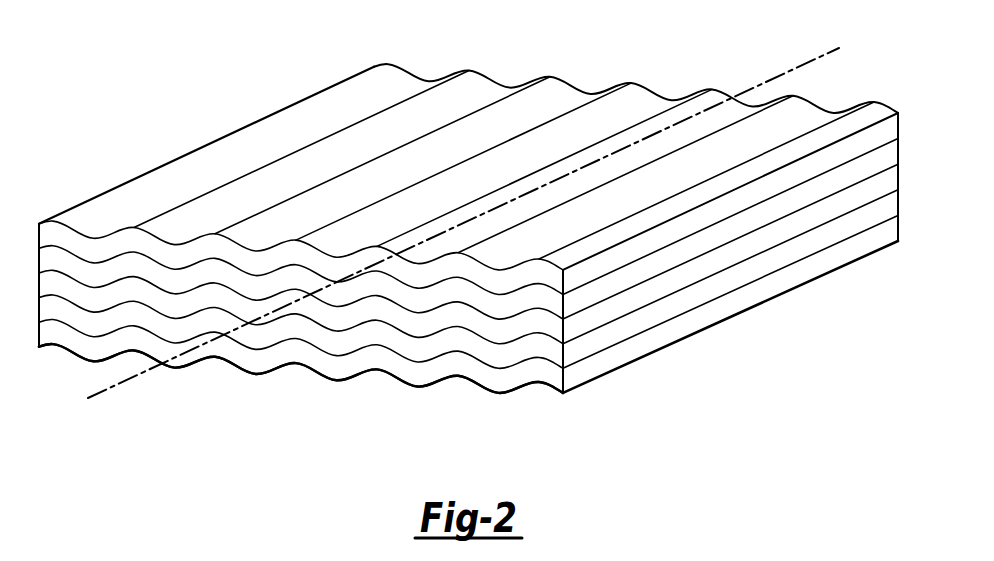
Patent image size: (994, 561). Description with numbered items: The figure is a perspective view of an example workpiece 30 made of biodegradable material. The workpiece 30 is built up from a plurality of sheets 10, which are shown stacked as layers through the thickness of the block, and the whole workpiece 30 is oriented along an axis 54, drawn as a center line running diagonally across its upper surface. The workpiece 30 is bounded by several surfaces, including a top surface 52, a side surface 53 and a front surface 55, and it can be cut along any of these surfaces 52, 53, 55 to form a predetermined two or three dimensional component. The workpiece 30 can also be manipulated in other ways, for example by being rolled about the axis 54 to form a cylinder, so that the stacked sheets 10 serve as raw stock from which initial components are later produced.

The sheets 10 is at (52, 280).
The workpiece 30 is at (765, 322).
The surface 52 is at (293, 138).
The surface 53 is at (832, 233).
The axis 54 is at (797, 61).
The surface 55 is at (312, 350).